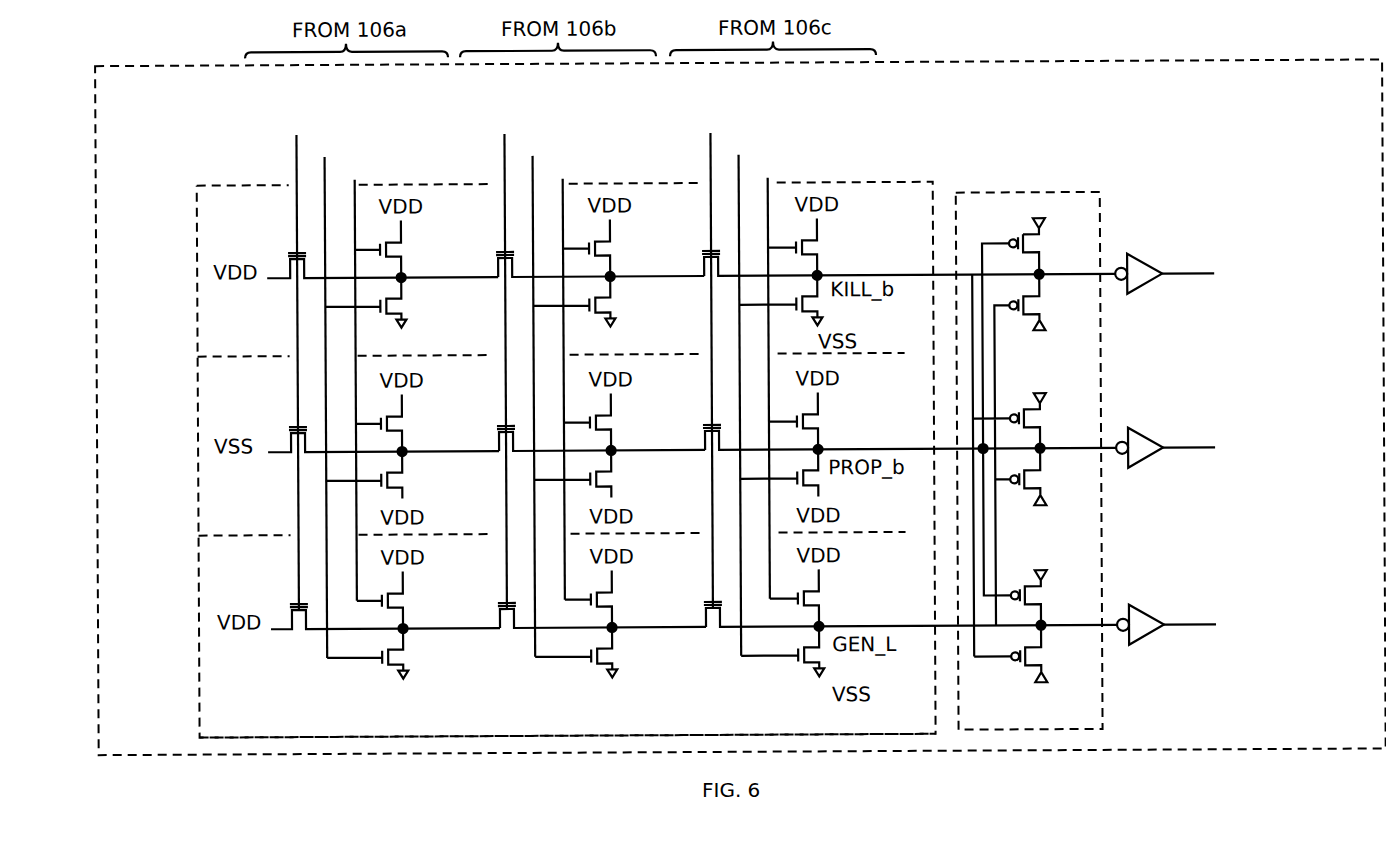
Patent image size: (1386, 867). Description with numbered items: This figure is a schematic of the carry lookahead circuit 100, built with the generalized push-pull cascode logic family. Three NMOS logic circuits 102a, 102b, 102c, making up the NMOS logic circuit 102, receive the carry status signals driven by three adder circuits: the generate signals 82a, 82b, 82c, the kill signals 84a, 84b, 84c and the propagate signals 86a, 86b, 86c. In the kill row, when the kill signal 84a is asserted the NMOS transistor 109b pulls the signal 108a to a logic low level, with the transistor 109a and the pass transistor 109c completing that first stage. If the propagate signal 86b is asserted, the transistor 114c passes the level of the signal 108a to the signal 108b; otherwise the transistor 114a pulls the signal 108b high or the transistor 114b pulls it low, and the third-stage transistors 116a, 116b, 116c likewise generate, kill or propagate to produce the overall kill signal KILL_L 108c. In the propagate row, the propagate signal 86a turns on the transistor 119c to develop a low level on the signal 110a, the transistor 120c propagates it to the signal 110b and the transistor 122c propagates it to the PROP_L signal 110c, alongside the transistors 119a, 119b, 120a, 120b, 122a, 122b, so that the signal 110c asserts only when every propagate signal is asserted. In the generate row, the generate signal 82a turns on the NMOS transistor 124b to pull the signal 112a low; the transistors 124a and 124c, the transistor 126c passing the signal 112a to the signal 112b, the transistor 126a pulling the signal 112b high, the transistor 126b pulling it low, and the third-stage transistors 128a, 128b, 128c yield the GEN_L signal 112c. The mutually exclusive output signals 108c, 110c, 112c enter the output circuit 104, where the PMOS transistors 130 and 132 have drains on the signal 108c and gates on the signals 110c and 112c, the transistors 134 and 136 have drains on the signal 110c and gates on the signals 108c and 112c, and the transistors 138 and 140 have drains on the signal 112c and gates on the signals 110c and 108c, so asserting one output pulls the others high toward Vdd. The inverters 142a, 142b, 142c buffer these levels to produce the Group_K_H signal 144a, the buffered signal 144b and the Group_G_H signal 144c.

The carry lookahead circuit 100 is at (740, 377).
The NMOS logic circuit 102 is at (565, 438).
The NMOS logic circuit 102a is at (511, 311).
The NMOS logic circuit 102b is at (513, 489).
The NMOS logic circuit 102c is at (530, 672).
The output circuit 104 is at (1029, 437).
The generate signal (G0_H) 82a is at (360, 381).
The generate signal 82b is at (569, 380).
The generate signal 82c is at (774, 379).
The kill signal (K0_H) 84a is at (393, 365).
The kill signal 84b is at (603, 364).
The kill signal 84c is at (808, 363).
The propagate signal (P0_H) 86a is at (301, 345).
The propagate signal (P1_H) 86b is at (510, 344).
The propagate signal 86c is at (715, 343).
The kill signal 108a is at (382, 265).
The kill signal 108b is at (601, 264).
The overall kill signal (KILL_L) 108c is at (909, 263).
The PMOS transistor 109a is at (411, 249).
The NMOS transistor 109b is at (396, 305).
The pass transistor 109c is at (262, 282).
The propagate signal 110a is at (383, 439).
The propagate signal 110b is at (602, 438).
The ultimate propagate signal (PROP_L) 110c is at (910, 437).
The generate signal 112a is at (385, 616).
The generate signal 112b is at (603, 615).
The overall generate signal (GEN_L) 112c is at (911, 614).
The transistor 114a is at (620, 248).
The transistor 114b is at (605, 304).
The transistor 114c is at (475, 283).
The PMOS transistor 116a is at (824, 247).
The NMOS transistor 116b is at (810, 303).
The pass transistor 116c is at (680, 277).
The PMOS transistor 119a is at (412, 423).
The NMOS transistor 119b is at (397, 479).
The transistor 119c is at (264, 453).
The PMOS transistor 120a is at (621, 422).
The NMOS transistor 120b is at (606, 478).
The transistor 120c is at (477, 455).
The PMOS transistor 122a is at (825, 421).
The NMOS transistor 122b is at (811, 477).
The transistor 122c is at (683, 450).
The PMOS transistor 124a is at (413, 600).
The NMOS transistor 124b is at (398, 656).
The pass transistor 124c is at (269, 632).
The transistor 126a is at (622, 599).
The transistor 126b is at (607, 655).
The transistor 126c is at (498, 639).
The PMOS transistor 128a is at (826, 598).
The NMOS transistor 128b is at (812, 654).
The pass transistor 128c is at (685, 628).
The PMOS transistor 130 is at (1047, 242).
The PMOS transistor 132 is at (1052, 302).
The PMOS transistor 134 is at (1051, 416).
The PMOS transistor 136 is at (1052, 479).
The PMOS transistor 138 is at (1053, 592).
The PMOS transistor 140 is at (1053, 658).
The inverter 142a is at (1151, 255).
The inverter 142b is at (1152, 429).
The inverter 142c is at (1153, 606).
The kill portion (Group_K_H) of carry-out status signals 144a is at (1263, 274).
The buffered output signal 144b is at (1264, 448).
The generate portion (Group_G_H) of carry-out status signals 144c is at (1264, 625).